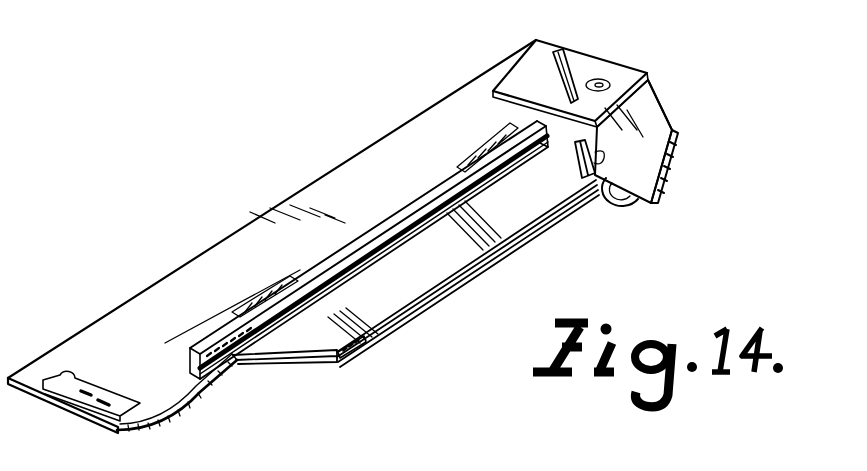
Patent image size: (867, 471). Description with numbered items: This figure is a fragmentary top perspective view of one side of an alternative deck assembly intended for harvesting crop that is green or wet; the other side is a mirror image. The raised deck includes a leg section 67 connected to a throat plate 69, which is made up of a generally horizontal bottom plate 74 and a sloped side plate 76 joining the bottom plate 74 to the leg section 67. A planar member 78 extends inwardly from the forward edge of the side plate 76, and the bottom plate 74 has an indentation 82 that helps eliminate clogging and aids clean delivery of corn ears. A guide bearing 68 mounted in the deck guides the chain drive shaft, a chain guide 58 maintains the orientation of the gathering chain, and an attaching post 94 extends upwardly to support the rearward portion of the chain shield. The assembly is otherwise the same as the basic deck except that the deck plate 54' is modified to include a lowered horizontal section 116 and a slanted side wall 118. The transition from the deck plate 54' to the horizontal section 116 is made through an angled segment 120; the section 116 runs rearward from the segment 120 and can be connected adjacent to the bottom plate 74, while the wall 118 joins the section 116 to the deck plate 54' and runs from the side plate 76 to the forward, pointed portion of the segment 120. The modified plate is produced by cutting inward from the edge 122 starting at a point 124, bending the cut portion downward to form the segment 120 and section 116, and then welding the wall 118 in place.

The deck plate 54' is at (91, 420).
The chain guide 58 is at (386, 217).
The leg section 67 is at (218, 244).
The guide bearing 68 is at (599, 83).
The throat plate 69 is at (653, 97).
The bottom plate 74 is at (666, 160).
The side plate 76 is at (650, 118).
The planar member 78 is at (580, 170).
The indentation 82 is at (622, 200).
The attaching post 94 is at (580, 60).
The lowered horizontal section 116 is at (386, 334).
The slanted side wall 118 is at (473, 280).
The angled segment 120 is at (334, 366).
The edge 122 is at (196, 396).
The point 124 is at (242, 366).